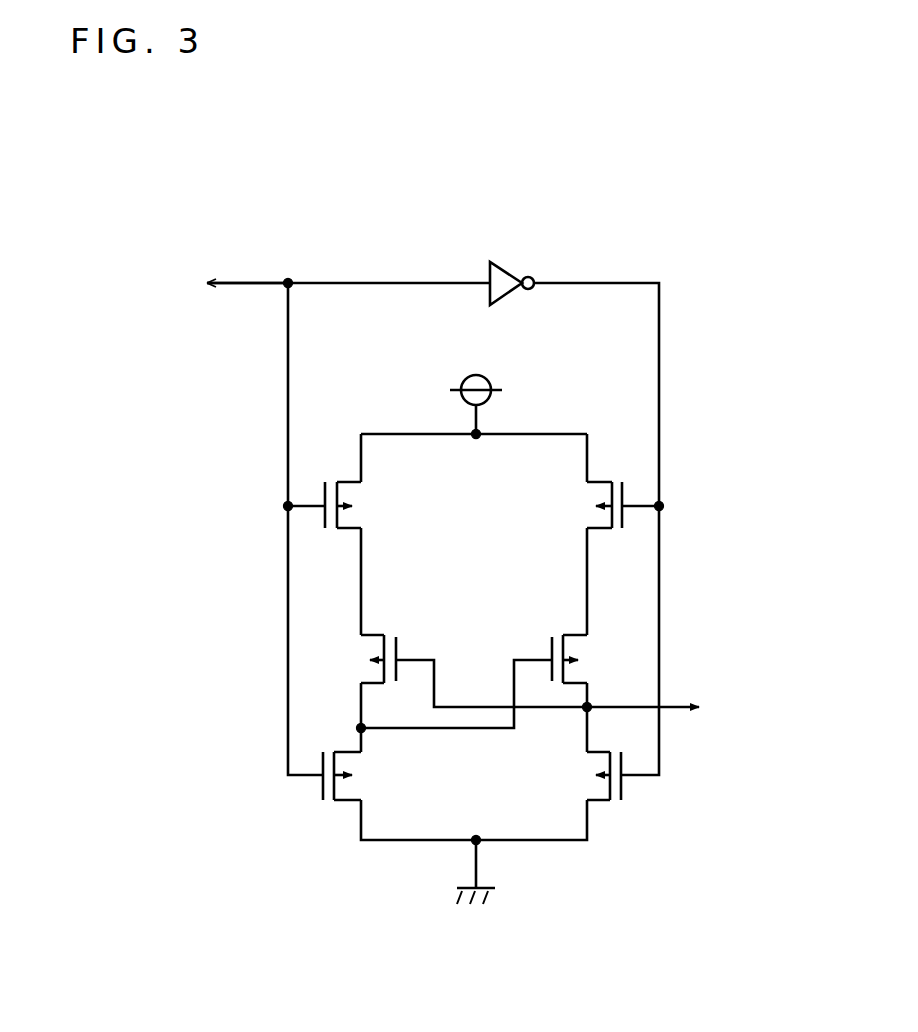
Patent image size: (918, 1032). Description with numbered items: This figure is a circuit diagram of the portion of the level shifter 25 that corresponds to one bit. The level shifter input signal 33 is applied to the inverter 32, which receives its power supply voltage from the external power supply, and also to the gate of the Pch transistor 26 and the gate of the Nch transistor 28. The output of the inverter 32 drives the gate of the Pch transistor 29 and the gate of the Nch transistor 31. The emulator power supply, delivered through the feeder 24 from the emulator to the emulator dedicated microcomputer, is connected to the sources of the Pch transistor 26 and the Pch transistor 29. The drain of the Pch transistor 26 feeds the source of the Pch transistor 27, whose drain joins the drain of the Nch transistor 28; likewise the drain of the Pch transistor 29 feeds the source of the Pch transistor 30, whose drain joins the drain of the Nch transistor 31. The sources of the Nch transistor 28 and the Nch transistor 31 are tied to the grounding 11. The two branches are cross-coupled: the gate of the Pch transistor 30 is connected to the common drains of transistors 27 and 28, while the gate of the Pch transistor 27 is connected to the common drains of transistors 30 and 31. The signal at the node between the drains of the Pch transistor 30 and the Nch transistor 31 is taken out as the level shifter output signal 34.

The level shifter input signal 33 is at (240, 283).
The inverter 32 is at (522, 263).
The level shifter 25 is at (680, 274).
The feeder 24 is at (490, 380).
The P-channel enhancement MOS transistor 26 is at (330, 480).
The P-channel enhancement MOS transistor 29 is at (618, 480).
The P-channel enhancement MOS transistor 27 is at (352, 657).
The P-channel enhancement MOS transistor 30 is at (597, 657).
The N-channel enhancement MOS transistor 28 is at (327, 752).
The N-channel enhancement MOS transistor 31 is at (615, 800).
The level shifter output signal 34 is at (680, 705).
The grounding 11 is at (467, 913).